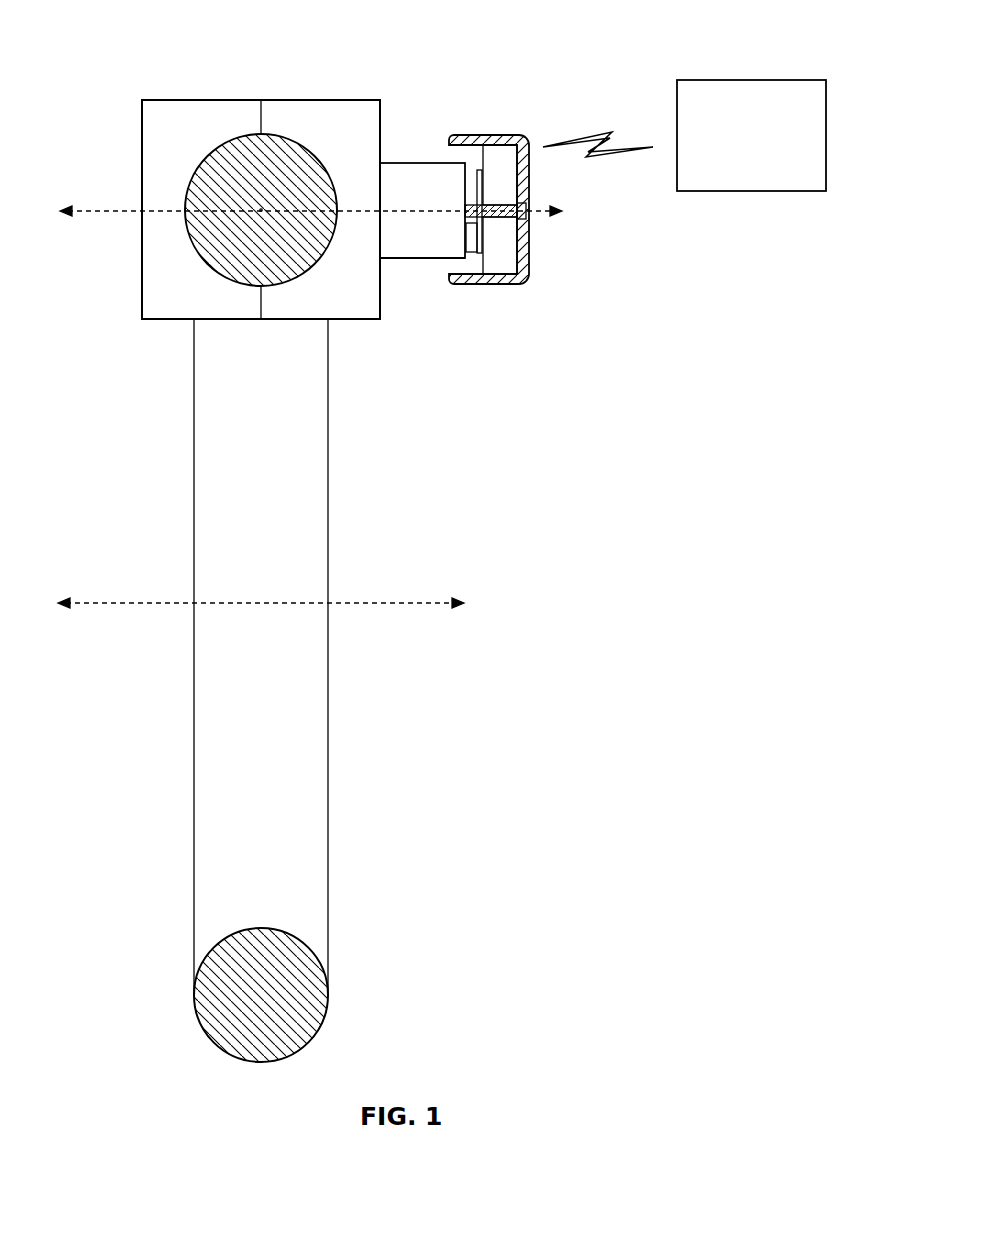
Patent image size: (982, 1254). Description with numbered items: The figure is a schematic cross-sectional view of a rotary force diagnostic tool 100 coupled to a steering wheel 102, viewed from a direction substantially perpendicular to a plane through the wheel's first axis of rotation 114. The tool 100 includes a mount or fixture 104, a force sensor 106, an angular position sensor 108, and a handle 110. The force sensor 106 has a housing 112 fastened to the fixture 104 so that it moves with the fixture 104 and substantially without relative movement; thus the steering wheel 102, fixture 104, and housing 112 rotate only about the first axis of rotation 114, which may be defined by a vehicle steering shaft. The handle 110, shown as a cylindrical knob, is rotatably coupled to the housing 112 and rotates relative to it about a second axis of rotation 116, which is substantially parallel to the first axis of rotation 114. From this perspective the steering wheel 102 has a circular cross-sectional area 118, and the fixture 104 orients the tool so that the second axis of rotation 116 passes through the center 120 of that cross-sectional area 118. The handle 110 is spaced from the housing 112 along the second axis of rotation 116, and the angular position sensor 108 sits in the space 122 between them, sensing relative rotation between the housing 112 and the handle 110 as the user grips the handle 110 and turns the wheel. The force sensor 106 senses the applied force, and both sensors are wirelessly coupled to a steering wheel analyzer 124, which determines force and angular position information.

The rotary force diagnostic tool 100 is at (550, 62).
The steering wheel 102 is at (330, 553).
The fixture 104 is at (204, 100).
The force sensor 106 is at (425, 163).
The angular position sensor 108 is at (470, 253).
The handle 110 is at (530, 268).
The housing 112 is at (412, 258).
The first axis of rotation 114 is at (424, 603).
The second axis of rotation 116 is at (92, 211).
The cross-sectional area 118 is at (188, 232).
The center 120 is at (261, 210).
The space 122 is at (472, 160).
The steering wheel analyzer 124 is at (737, 80).